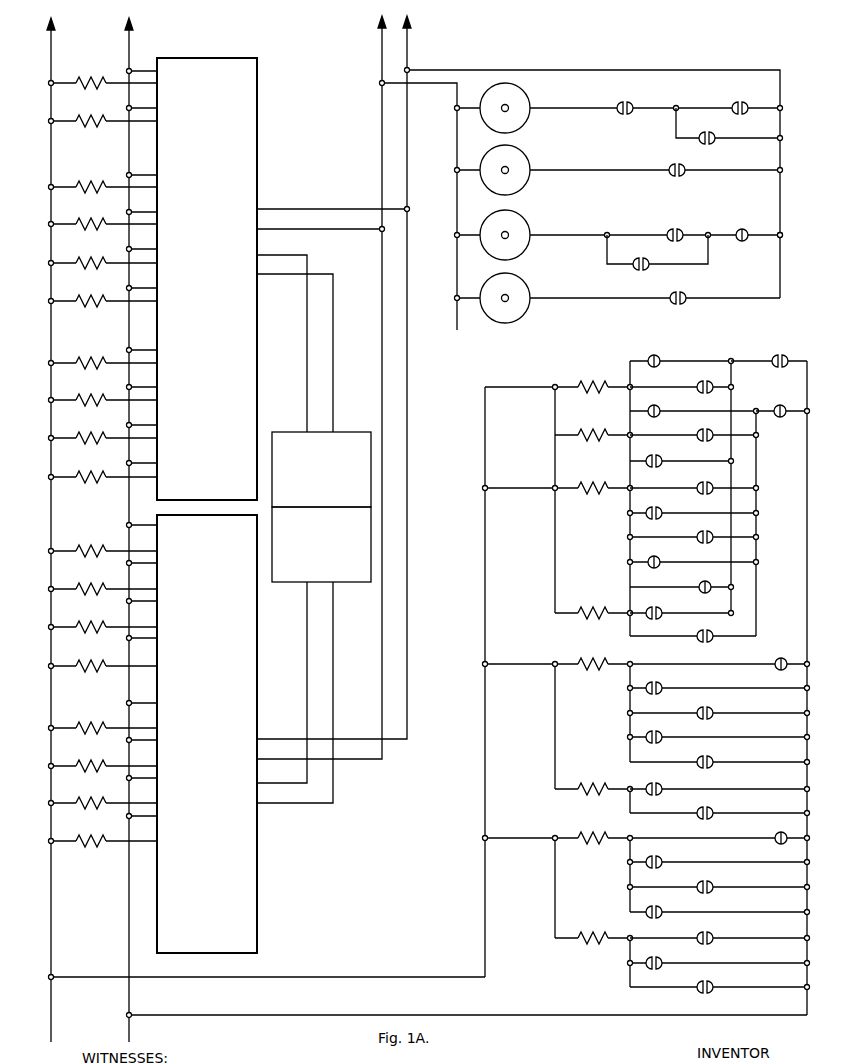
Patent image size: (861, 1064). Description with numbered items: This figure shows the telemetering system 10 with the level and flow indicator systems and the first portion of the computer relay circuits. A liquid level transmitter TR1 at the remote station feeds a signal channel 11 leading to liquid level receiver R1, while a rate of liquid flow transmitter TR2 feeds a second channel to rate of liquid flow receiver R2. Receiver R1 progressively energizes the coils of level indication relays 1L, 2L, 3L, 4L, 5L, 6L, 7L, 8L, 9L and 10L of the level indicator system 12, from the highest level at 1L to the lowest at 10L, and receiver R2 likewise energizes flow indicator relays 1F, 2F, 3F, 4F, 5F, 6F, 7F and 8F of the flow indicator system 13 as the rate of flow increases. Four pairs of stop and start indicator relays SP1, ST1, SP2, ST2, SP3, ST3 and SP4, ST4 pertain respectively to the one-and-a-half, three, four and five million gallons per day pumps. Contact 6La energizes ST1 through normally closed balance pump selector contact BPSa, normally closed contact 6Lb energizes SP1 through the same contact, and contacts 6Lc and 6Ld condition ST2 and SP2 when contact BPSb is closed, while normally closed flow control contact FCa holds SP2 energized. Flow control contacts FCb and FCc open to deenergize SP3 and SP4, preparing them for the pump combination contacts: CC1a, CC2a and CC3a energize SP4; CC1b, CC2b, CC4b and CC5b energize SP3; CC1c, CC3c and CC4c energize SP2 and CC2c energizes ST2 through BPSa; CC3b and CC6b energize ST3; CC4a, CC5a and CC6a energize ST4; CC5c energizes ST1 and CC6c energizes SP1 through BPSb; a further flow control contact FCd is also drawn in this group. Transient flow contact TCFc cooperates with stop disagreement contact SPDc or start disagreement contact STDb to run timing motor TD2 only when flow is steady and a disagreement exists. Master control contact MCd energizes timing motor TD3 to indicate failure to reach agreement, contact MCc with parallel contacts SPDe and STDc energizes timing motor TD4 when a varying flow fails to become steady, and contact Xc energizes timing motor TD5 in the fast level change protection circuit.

The telemetering system 10 is at (316, 134).
The signal channel 11 is at (296, 529).
The level indicator system 12 is at (102, 155).
The flow indicator system 13 is at (86, 700).
The level indication relay 1L is at (91, 79).
The level indication relay 2L is at (89, 113).
The level indication relay 3L is at (97, 180).
The level indication relay 4L is at (92, 217).
The level indication relay 5L is at (92, 255).
The level indication relay 6L is at (100, 293).
The level indication relay 7L is at (97, 355).
The level indication relay 8L is at (95, 392).
The level indication relay 9L is at (89, 430).
The level indication relay 10L is at (91, 469).
The rate of flow indicator relay 1F is at (102, 544).
The rate of flow indicator relay 2F is at (93, 582).
The rate of flow indicator relay 3F is at (98, 620).
The rate of flow indicator relay 4F is at (96, 658).
The rate of flow indicator relay 5F is at (92, 721).
The rate of flow indicator relay 6F is at (98, 759).
The rate of flow indicator relay 7F is at (88, 796).
The rate of flow indicator relay 8F is at (94, 834).
The liquid level receiver R1 is at (207, 279).
The rate of liquid flow receiver R2 is at (207, 734).
The liquid level transmitter TR1 is at (291, 430).
The rate of liquid flow transmitter TR2 is at (338, 584).
The timing motor TD2 is at (521, 93).
The timing motor TD3 is at (526, 161).
The timing motor TD4 is at (528, 223).
The timing motor TD5 is at (521, 283).
The transient flow contact TCFc is at (622, 102).
The stop disagreement contact SPDc is at (736, 102).
The start disagreement contact STDb is at (710, 134).
The master control contact MCd is at (684, 164).
The stop disagreement contact SPDe is at (666, 229).
The master control contact MCc is at (738, 228).
The start disagreement contact STDc is at (634, 272).
The relay X contact Xc is at (675, 292).
The stop indicator relay SP1 is at (584, 378).
The stop indicator relay SP2 is at (592, 483).
The stop indicator relay SP3 is at (578, 661).
The stop indicator relay SP4 is at (588, 833).
The start indicator relay ST1 is at (594, 428).
The start indicator relay ST2 is at (594, 606).
The start indicator relay ST3 is at (598, 783).
The start indicator relay ST4 is at (601, 933).
The contact FCd is at (650, 356).
The pump combination relay contact CC6c is at (709, 382).
The normally closed contact 6Lb is at (655, 406).
The balance pump selector contact BPSb is at (774, 356).
The balance pump selector contact BPSa is at (789, 404).
The relay 6L contact 6La is at (705, 430).
The pump combination relay contact CC5c is at (658, 456).
The pump combination relay contact CC4c is at (700, 484).
The pump combination relay contact CC3c is at (658, 509).
The pump combination relay contact CC1c is at (706, 534).
The flow control relay contact FCa is at (654, 557).
The relay 6L contact 6Lc is at (700, 582).
The relay 6L contact 6Ld is at (650, 609).
The pump combination relay contact CC2c is at (700, 631).
The flow control relay contact FCb is at (776, 660).
The pump combination relay contact CC5b is at (658, 683).
The pump combination relay contact CC4b is at (710, 708).
The pump combination relay contact CC2b is at (644, 731).
The pump combination relay contact CC1b is at (706, 757).
The pump combination relay contact CC6b is at (658, 782).
The pump combination relay contact CC3b is at (710, 809).
The flow control relay contact FCc is at (778, 835).
The pump combination relay contact CC3a is at (658, 858).
The pump combination relay contact CC2a is at (711, 883).
The pump combination relay contact CC1a is at (660, 908).
The pump combination relay contact CC6a is at (718, 933).
The pump combination relay contact CC5a is at (661, 959).
The pump combination relay contact CC4a is at (718, 982).